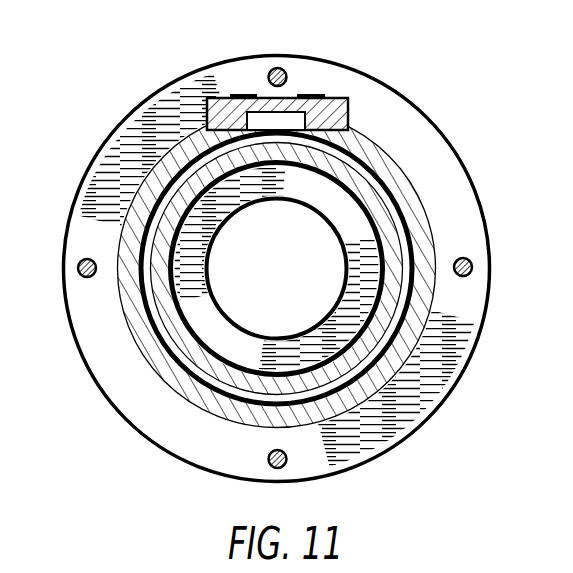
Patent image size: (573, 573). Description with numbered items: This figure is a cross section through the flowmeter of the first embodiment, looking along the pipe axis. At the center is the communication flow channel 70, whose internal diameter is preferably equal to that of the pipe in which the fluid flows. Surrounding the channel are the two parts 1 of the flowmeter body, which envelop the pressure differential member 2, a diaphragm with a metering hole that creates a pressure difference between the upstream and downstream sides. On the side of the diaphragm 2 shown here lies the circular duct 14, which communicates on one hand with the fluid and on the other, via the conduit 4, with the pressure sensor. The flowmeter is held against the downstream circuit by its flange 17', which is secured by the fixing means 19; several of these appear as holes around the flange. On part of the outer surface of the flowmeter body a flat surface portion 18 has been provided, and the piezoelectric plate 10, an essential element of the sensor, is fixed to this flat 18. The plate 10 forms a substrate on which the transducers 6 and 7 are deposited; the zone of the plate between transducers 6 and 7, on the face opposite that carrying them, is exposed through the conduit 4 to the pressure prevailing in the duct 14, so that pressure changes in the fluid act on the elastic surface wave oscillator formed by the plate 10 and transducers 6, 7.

The flowmeter body parts 1 is at (157, 228).
The pressure differential member 2 is at (250, 198).
The conduit 4 is at (303, 120).
The transducer 6 is at (313, 95).
The transducer 7 is at (237, 95).
The piezoelectric plate 10 is at (207, 108).
The circular duct 14 is at (170, 194).
The flange 17' is at (303, 269).
The flat surface portion 18 is at (345, 134).
The fixing means 19 is at (282, 69).
The communication flow channel 70 is at (312, 272).